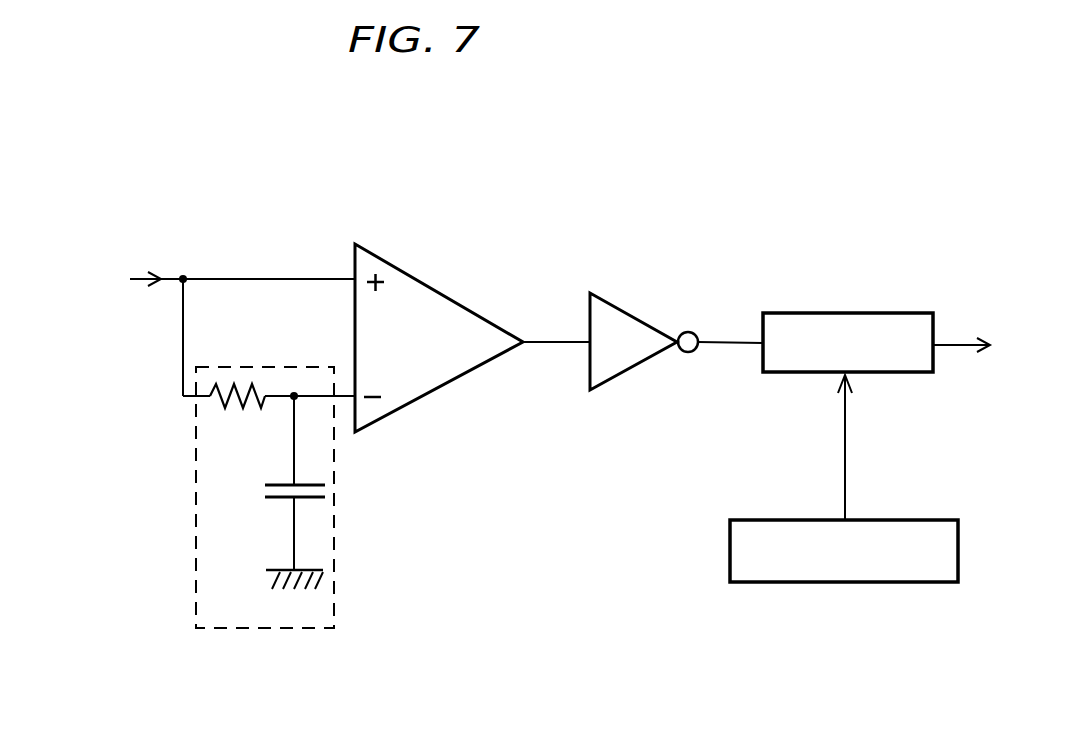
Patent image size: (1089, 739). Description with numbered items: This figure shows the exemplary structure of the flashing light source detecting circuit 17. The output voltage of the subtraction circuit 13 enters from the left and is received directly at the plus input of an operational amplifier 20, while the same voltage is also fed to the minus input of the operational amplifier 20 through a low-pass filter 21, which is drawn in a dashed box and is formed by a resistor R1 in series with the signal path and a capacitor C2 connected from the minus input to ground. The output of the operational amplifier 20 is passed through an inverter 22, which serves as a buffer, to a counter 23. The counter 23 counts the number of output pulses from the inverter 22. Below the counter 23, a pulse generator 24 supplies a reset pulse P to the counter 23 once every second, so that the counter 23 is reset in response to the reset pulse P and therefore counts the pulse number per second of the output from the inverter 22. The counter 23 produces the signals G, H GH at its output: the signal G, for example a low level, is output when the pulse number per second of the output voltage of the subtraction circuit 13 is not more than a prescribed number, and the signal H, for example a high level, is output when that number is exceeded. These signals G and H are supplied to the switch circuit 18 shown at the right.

The flashing light source detecting circuit 17 is at (595, 248).
The subtraction circuit 13 is at (143, 264).
The low-pass filter 21 is at (195, 552).
The resistor R1 is at (238, 408).
The capacitor C2 is at (277, 498).
The operational amplifier 20 is at (467, 371).
The inverter 22 is at (640, 368).
The counter 23 is at (780, 375).
The switch circuit 18 is at (990, 359).
The signals G and H GH is at (952, 345).
The reset pulse P is at (845, 455).
The pulse generator 24 is at (780, 584).